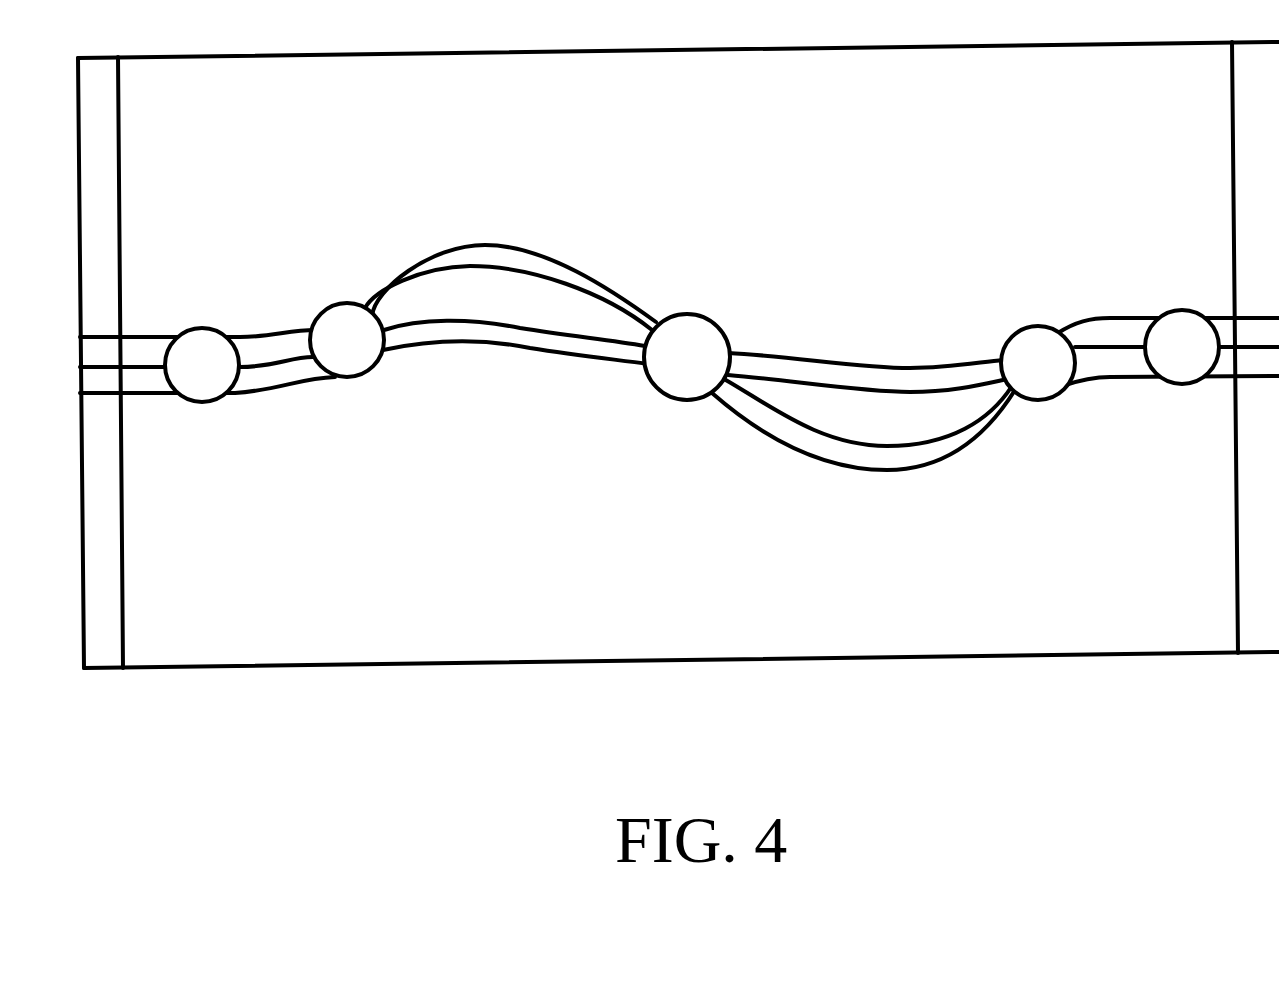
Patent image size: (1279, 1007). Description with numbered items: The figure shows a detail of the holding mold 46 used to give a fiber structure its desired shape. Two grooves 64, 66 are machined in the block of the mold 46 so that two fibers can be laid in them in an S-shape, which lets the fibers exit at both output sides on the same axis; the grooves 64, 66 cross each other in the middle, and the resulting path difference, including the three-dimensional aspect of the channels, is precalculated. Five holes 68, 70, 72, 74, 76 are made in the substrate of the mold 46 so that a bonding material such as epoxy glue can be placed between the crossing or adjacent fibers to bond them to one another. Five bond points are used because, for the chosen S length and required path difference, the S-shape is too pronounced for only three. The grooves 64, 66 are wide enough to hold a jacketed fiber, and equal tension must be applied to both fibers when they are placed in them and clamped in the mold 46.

The mold 46 is at (1092, 607).
The groove 64 is at (597, 296).
The groove 66 is at (817, 370).
The hole 68 is at (203, 343).
The hole 70 is at (343, 313).
The hole 72 is at (708, 322).
The hole 74 is at (1045, 342).
The hole 76 is at (1180, 325).